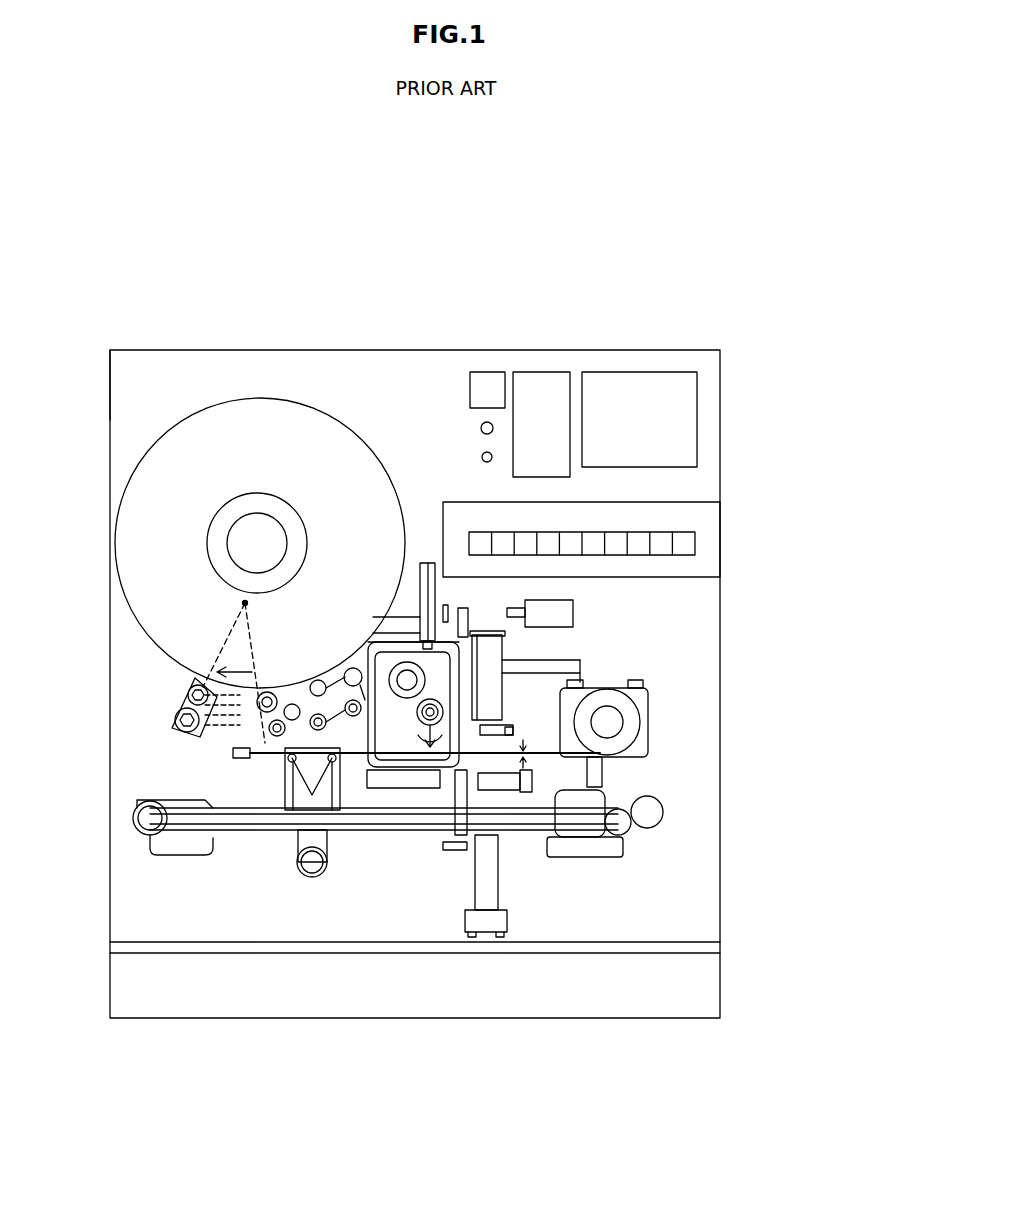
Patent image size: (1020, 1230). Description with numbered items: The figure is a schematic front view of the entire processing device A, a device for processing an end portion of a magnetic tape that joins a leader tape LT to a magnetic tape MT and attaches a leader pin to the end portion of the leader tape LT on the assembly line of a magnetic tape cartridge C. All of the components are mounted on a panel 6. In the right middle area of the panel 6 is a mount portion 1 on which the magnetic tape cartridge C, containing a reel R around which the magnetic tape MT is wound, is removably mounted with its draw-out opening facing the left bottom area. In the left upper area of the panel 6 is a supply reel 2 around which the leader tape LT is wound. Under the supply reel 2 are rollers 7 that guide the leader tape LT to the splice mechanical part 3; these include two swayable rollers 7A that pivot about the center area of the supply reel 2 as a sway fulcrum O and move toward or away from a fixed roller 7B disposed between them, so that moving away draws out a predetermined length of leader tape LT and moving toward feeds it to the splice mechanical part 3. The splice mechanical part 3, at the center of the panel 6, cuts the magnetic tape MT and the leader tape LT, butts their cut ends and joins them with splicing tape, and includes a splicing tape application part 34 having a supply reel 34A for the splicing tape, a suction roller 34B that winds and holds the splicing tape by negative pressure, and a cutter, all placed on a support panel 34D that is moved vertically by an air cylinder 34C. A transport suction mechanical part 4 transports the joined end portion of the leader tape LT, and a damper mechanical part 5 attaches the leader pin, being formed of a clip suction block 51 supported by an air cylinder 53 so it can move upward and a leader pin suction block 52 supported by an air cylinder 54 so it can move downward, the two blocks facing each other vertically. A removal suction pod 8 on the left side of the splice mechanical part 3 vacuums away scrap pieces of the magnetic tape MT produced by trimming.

The processing device A is at (462, 243).
The panel 6 is at (155, 382).
The supply reel 2 is at (228, 418).
The splicing tape application part 34 is at (480, 316).
The supply reel 34A is at (380, 665).
The suction roller 34B is at (393, 670).
The air cylinder 34C is at (423, 583).
The support panel 34D is at (440, 700).
The air cylinder 54 is at (483, 690).
The leader pin suction block 52 is at (507, 720).
The mount portion 1 is at (583, 683).
The magnetic tape cartridge C is at (656, 713).
The reel R is at (627, 737).
The magnetic tape MT is at (553, 758).
The clip suction block 51 is at (650, 828).
The sway fulcrum O is at (245, 603).
The rollers 7 is at (295, 680).
The swayable rollers 7A is at (258, 708).
The fixed roller 7B is at (290, 690).
The removal suction pod 8 is at (278, 782).
The leader tape LT is at (352, 760).
The splice mechanical part 3 is at (402, 772).
The transport suction mechanical part 4 is at (447, 770).
The air cylinder 53 is at (492, 890).
The damper mechanical part 5 is at (515, 797).